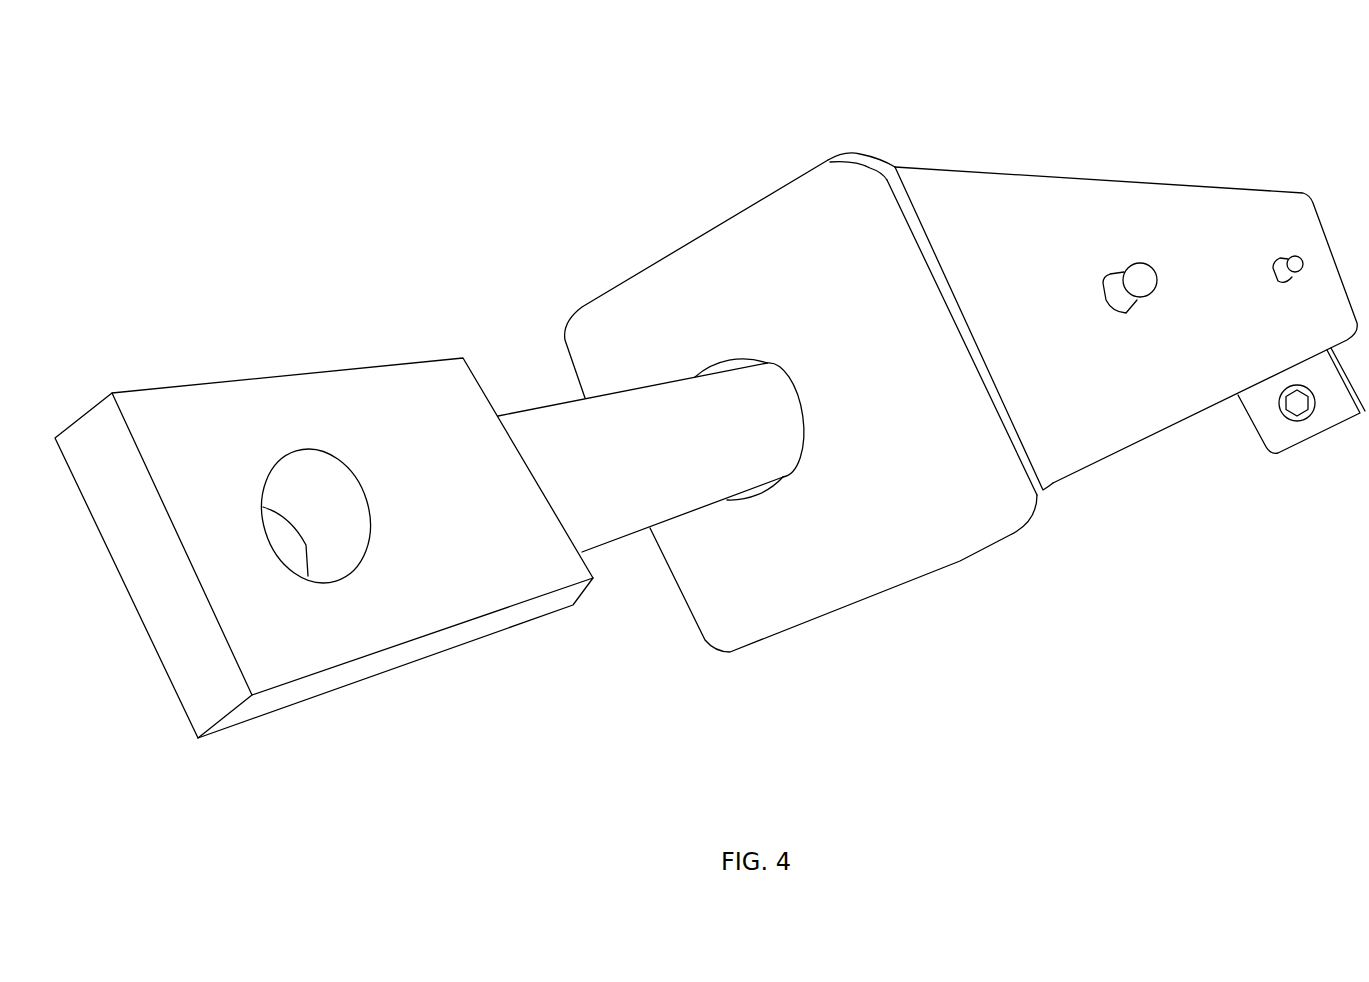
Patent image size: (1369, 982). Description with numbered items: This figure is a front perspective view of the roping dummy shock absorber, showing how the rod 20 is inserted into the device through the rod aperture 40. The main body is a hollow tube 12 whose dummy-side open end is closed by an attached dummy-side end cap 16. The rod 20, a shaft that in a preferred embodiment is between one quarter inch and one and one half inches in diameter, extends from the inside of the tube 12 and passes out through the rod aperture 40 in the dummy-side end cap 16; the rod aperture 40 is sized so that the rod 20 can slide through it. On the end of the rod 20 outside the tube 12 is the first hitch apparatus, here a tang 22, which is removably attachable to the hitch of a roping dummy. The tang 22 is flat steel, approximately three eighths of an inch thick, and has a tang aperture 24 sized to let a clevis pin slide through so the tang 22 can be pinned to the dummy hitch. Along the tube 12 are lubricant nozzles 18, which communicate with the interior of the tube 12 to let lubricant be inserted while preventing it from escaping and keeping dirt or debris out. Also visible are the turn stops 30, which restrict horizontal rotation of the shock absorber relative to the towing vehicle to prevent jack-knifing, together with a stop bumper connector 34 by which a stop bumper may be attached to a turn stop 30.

The hollow tube 12 is at (1040, 173).
The dummy-side end cap 16 is at (768, 200).
The lubricant nozzles 18 is at (1130, 267).
The rod 20 is at (555, 403).
The tang 22 is at (139, 378).
The tang aperture 24 is at (283, 453).
The turn stops 30 is at (1256, 430).
The stop bumper connectors 34 is at (1299, 421).
The rod aperture 40 is at (822, 468).